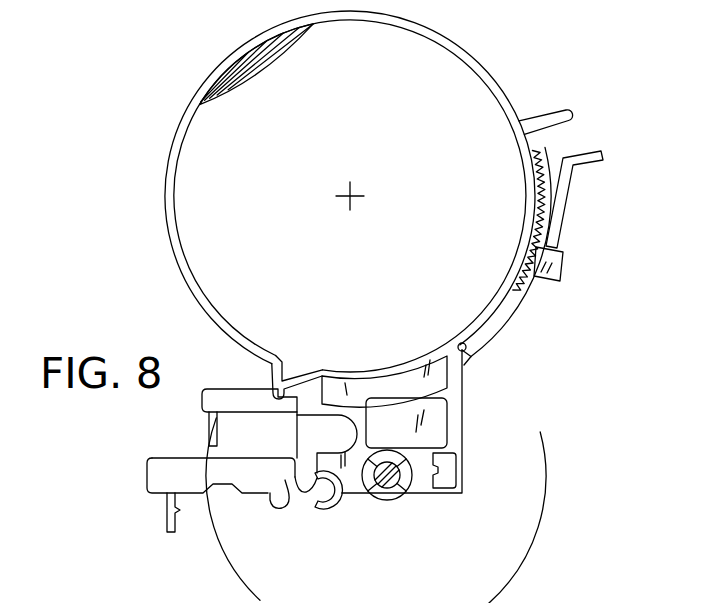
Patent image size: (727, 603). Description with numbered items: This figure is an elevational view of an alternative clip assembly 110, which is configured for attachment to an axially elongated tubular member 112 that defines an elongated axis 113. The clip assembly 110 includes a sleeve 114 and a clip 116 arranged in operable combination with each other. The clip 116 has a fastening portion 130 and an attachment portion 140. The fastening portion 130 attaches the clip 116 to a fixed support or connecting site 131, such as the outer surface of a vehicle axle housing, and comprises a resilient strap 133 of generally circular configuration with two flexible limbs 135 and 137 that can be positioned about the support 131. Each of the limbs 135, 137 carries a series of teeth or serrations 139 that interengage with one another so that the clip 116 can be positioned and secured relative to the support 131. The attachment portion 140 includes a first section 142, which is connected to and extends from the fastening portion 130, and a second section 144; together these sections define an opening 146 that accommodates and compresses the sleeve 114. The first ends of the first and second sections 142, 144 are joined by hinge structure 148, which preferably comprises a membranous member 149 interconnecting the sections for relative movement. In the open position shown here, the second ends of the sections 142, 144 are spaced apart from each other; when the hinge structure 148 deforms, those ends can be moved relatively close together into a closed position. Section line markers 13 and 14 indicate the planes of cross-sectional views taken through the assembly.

The clip assembly 110 is at (214, 42).
The support or connecting site 131 is at (271, 64).
The flexible limb 135 is at (497, 78).
The resilient strap 133 is at (157, 172).
The fastening portion 130 is at (160, 278).
The teeth or serrations 139 is at (538, 233).
The flexible limb 137 is at (487, 314).
The section line 13- 13 is at (235, 403).
The clip 116 is at (478, 377).
The attachment portion 140 is at (478, 436).
The opening 146 is at (407, 466).
The second section 144 is at (238, 466).
The first section 142 is at (333, 452).
The membranous member 149 is at (277, 488).
The hinge structure 148 is at (302, 507).
The section line 14- 14 is at (312, 512).
The elongated axis 113 is at (377, 500).
The tubular member 112 is at (396, 500).
The sleeve 114 is at (413, 506).